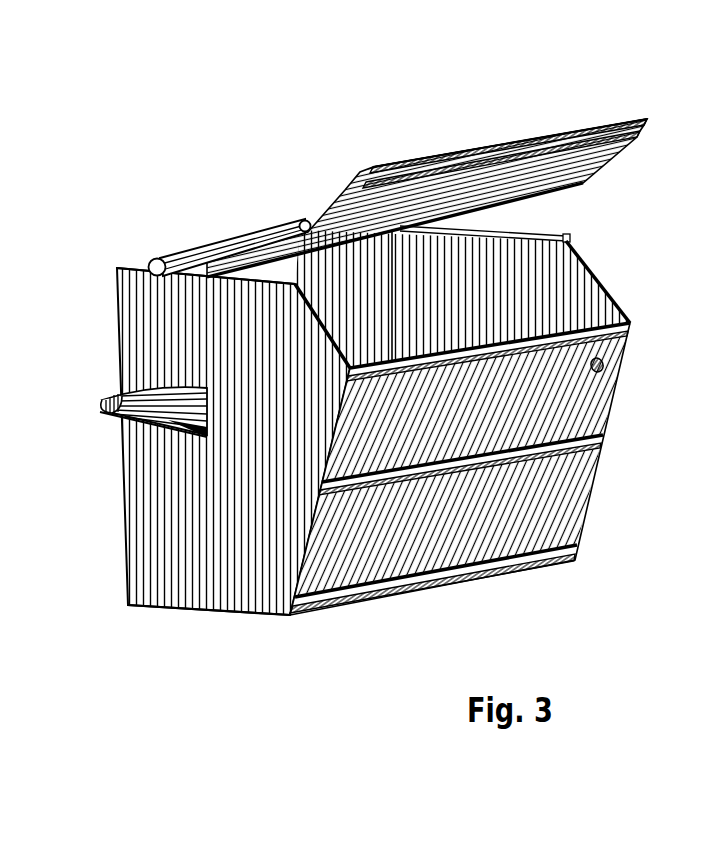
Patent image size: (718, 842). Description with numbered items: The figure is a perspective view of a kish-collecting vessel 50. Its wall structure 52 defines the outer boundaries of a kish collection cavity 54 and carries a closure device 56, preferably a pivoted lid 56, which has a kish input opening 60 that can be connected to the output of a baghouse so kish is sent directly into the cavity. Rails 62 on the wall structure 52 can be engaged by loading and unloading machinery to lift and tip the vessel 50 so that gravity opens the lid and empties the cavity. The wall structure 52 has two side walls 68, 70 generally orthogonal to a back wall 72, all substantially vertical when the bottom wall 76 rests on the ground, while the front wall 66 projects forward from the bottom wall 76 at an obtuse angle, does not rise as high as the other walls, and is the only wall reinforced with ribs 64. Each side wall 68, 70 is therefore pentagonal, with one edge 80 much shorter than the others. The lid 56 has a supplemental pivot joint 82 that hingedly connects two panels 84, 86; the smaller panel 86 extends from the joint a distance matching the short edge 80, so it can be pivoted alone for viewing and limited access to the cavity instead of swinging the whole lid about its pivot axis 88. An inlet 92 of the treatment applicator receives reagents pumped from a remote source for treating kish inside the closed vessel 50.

The vessel 50 is at (376, 392).
The wall structure 52 is at (381, 448).
The kish collection cavity 54 is at (535, 283).
The closure device 56 is at (388, 166).
The kish input opening 60 is at (255, 275).
The rails 62 is at (162, 398).
The ribs 64 is at (632, 330).
The front wall 66 is at (432, 552).
The side wall 68 is at (231, 604).
The side wall 70 is at (547, 233).
The back wall 72 is at (326, 200).
The bottom wall 76 is at (207, 612).
The edge 80 is at (320, 325).
The supplemental pivot joint 82 is at (301, 221).
The panel 84 is at (226, 256).
The panel 86 is at (552, 135).
The pivot axis 88 is at (172, 258).
The inlet 92 is at (605, 377).